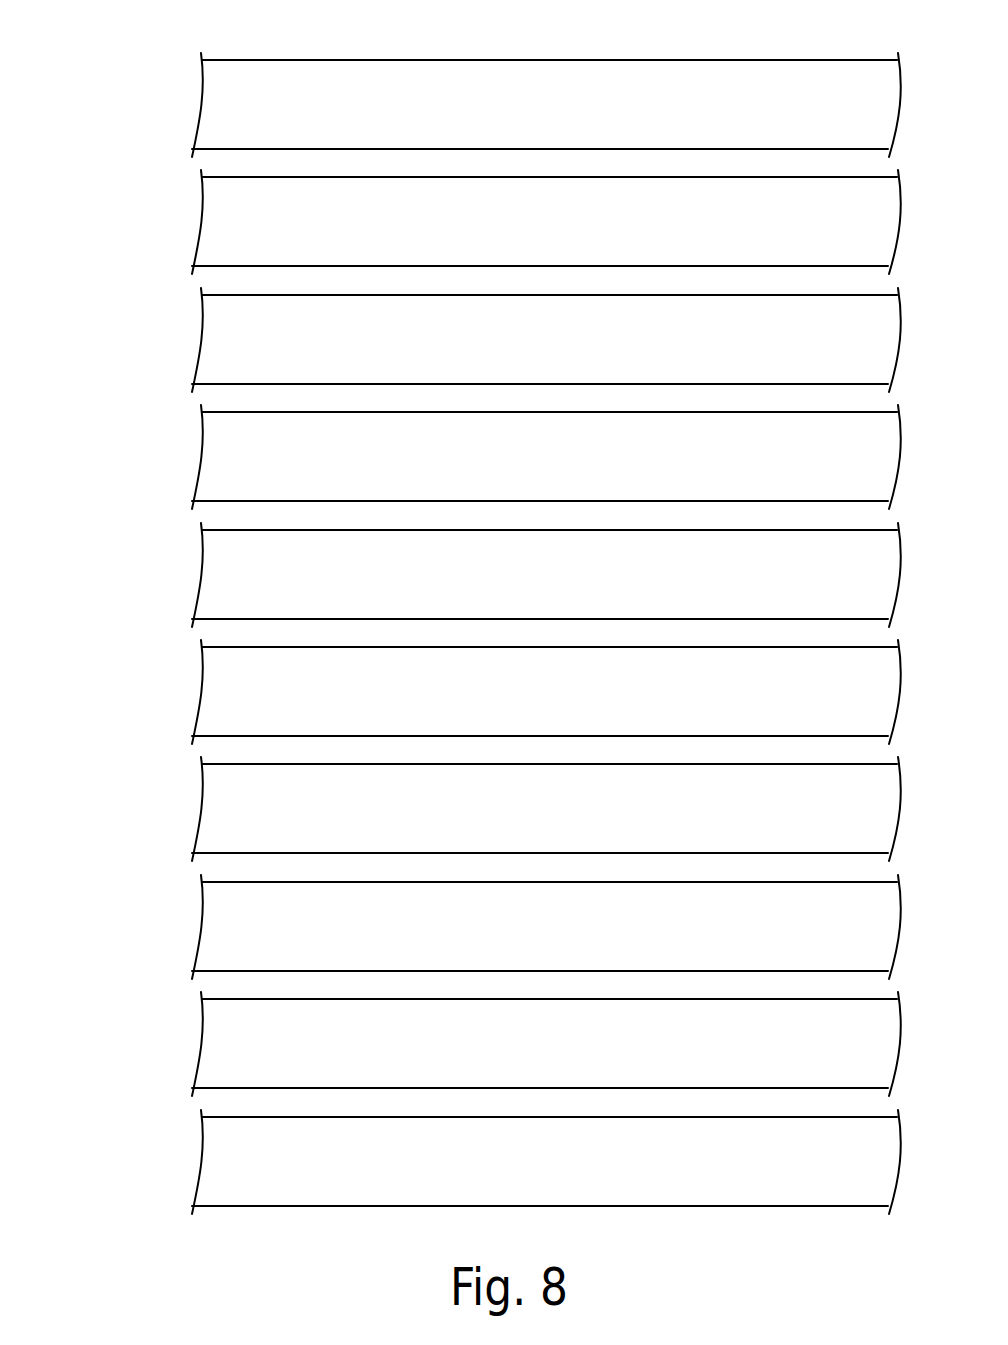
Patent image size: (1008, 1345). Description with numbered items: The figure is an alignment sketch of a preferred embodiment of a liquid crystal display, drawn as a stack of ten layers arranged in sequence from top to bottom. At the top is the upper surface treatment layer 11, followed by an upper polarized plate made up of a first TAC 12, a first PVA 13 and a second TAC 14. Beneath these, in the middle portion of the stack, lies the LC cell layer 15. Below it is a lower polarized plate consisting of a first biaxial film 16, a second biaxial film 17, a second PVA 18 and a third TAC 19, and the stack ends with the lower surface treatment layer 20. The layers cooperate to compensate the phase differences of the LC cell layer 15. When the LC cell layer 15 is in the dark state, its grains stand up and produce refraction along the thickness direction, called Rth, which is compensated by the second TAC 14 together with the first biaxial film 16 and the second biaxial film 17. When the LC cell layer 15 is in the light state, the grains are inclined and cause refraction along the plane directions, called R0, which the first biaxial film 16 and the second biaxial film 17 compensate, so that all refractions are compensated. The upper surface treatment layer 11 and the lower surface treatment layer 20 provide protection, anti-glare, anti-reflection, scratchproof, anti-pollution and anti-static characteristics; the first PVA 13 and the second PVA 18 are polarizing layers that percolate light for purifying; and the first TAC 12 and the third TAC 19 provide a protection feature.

The upper surface treatment layer 11 is at (222, 117).
The first TAC 12 is at (222, 234).
The first PVA 13 is at (222, 352).
The second TAC 14 is at (222, 469).
The LC cell layer 15 is at (222, 587).
The first biaxial film 16 is at (222, 704).
The second biaxial film 17 is at (222, 821).
The second PVA 18 is at (222, 939).
The third TAC 19 is at (222, 1056).
The lower surface treatment layer 20 is at (222, 1174).